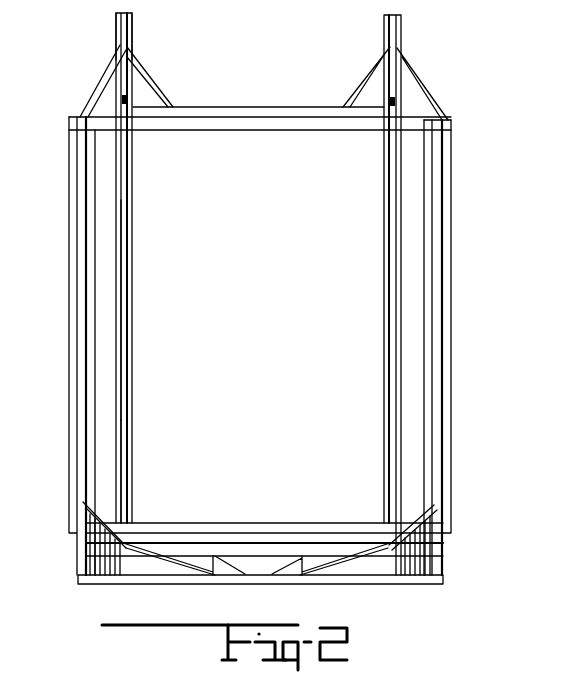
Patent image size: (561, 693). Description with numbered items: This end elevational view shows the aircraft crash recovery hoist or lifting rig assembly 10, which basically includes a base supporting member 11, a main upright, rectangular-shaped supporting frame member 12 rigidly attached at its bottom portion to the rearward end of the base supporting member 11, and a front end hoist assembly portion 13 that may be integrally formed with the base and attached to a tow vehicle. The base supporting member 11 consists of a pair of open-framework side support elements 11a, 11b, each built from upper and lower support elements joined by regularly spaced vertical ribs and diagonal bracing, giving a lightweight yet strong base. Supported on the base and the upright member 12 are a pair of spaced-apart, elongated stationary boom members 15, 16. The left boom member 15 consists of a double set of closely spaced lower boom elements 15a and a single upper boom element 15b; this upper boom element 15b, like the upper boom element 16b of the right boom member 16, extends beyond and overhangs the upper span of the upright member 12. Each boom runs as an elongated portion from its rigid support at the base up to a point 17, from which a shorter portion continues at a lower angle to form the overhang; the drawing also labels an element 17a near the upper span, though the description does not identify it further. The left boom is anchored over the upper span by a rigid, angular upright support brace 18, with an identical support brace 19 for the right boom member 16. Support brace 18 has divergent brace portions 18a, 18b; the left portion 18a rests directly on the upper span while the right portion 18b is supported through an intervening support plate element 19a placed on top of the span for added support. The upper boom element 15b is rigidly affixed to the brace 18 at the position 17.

The aircraft crash recovery hoist or lifting rig assembly 10 is at (276, 341).
The base supporting member 11 is at (140, 578).
The left-hand side support element 11a is at (80, 552).
The right-hand side support element 11b is at (440, 548).
The main upright supporting frame member 12 is at (66, 361).
The front end hoist assembly portion 13 is at (352, 576).
The left boom member 15 is at (132, 268).
The lower boom elements 15a is at (133, 337).
The upper boom element 15b is at (127, 457).
The right boom member 16 is at (375, 282).
The upper boom element of right boom member 16b is at (440, 375).
The boom angle point 17 is at (123, 43).
The top cross rail 17a is at (203, 130).
The upright support brace 18 is at (127, 68).
The left divergent brace portion 18a is at (98, 80).
The right divergent brace portion 18b is at (158, 80).
The support brace for right boom member 19 is at (423, 87).
The support plate element 19a is at (257, 107).